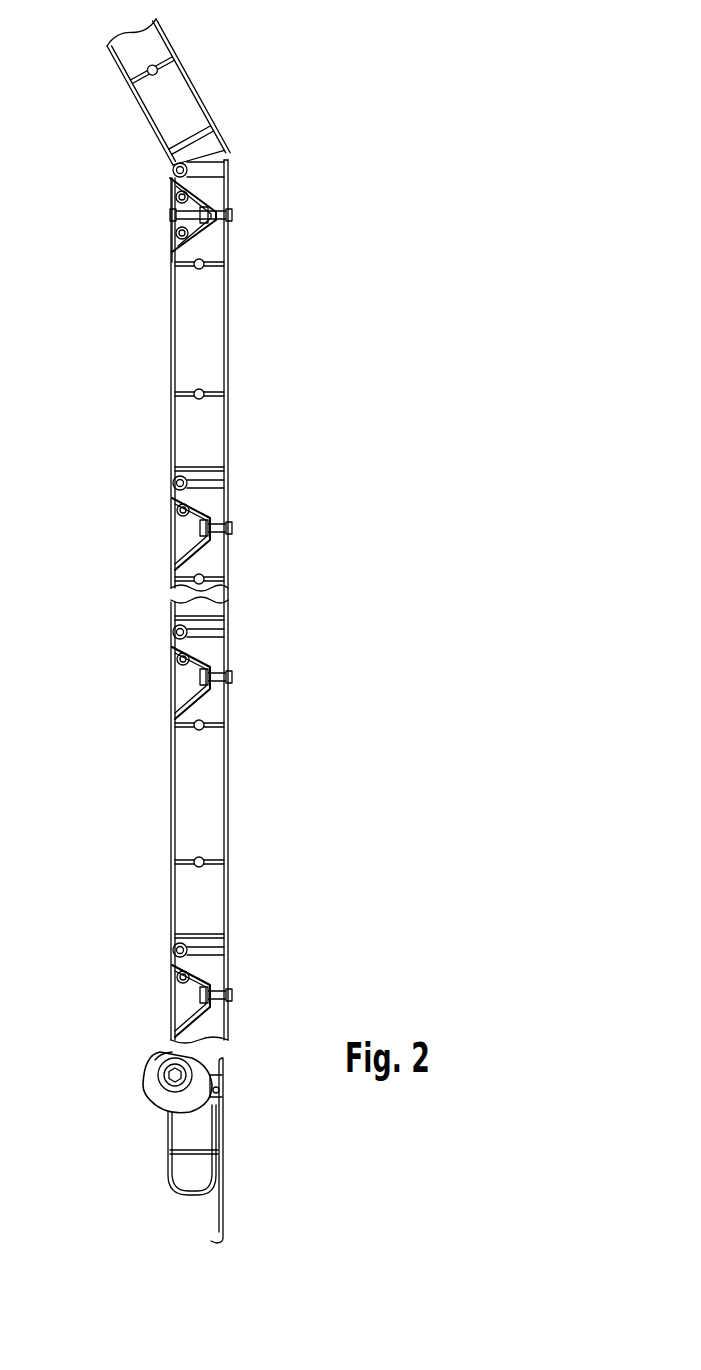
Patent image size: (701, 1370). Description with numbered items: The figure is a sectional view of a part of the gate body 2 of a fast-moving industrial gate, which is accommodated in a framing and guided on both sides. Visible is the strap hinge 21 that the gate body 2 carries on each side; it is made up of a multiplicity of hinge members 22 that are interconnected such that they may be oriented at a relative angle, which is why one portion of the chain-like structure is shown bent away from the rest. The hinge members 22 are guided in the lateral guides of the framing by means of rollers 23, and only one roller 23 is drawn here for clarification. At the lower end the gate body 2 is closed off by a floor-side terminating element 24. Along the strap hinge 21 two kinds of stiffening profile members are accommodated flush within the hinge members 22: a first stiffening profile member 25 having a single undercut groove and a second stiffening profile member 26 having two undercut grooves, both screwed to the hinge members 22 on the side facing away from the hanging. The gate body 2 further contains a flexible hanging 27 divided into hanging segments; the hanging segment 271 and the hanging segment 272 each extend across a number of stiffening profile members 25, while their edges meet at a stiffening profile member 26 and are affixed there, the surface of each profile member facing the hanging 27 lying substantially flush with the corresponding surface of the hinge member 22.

The gate body 2 is at (210, 629).
The strap hinge 21 is at (240, 329).
The hinge members 22 is at (231, 540).
The rollers 23 is at (162, 1092).
The floor-side terminating element 24 is at (162, 1150).
The first stiffening profile member 25 is at (169, 752).
The second stiffening profile member 26 is at (168, 217).
The flexible hanging 27 is at (159, 753).
The hanging segment 271 is at (155, 850).
The hanging segment 272 is at (137, 97).